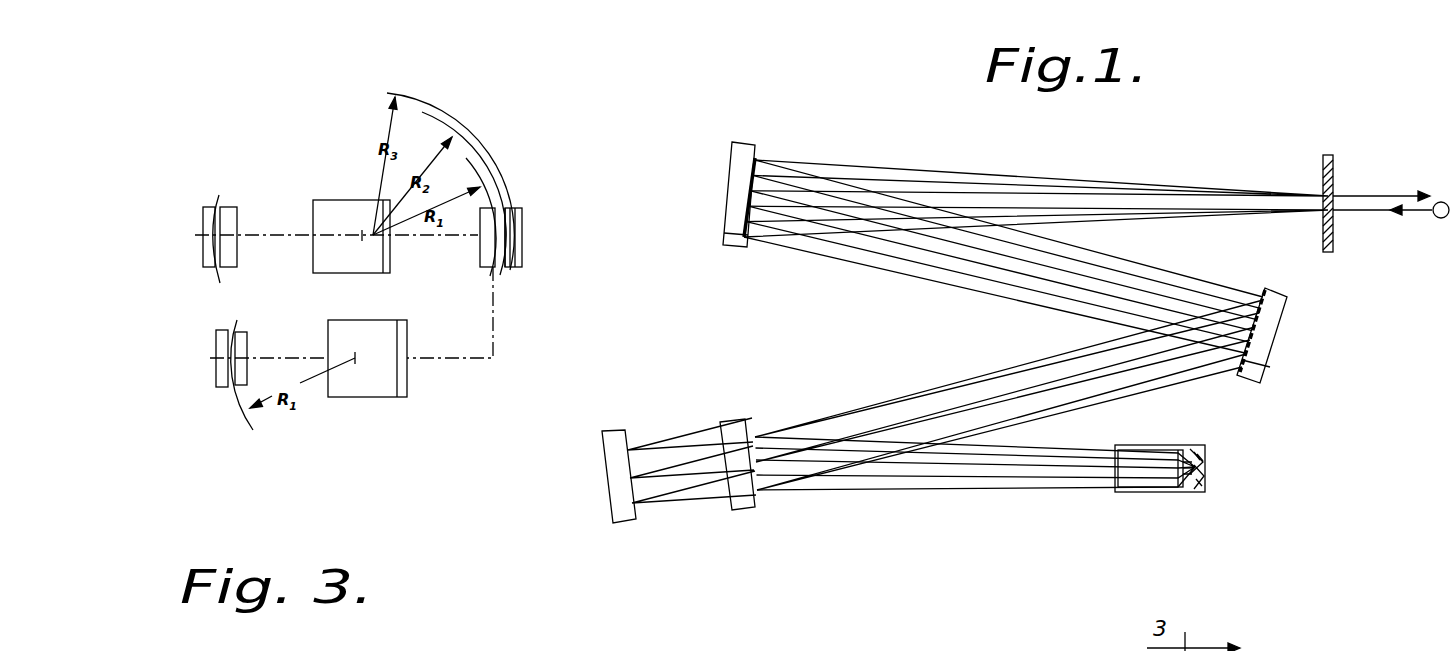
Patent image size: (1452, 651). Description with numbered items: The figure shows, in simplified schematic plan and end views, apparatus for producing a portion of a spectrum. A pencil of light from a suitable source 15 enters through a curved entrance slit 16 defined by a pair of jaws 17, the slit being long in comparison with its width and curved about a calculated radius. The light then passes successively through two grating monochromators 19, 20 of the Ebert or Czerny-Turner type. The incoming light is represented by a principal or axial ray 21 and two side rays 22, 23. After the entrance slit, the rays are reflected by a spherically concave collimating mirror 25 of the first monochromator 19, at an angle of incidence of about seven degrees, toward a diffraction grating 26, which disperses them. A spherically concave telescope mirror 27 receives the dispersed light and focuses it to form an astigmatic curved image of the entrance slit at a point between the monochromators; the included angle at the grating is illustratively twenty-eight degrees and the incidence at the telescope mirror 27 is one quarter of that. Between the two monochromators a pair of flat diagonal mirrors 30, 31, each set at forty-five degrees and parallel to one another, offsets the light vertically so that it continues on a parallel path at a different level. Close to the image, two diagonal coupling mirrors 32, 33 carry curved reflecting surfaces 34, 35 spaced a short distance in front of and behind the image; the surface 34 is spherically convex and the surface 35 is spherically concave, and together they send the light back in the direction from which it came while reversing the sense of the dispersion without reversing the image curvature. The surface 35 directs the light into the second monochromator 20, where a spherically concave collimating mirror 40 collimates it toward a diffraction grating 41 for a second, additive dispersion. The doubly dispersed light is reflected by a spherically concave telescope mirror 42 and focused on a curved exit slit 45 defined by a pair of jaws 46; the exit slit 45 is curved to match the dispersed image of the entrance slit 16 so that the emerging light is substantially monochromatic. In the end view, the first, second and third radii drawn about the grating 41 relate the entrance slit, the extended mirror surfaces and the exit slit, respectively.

In FIG. 1, the source 15 is at (1447, 222).
In FIG. 3, the entrance slit 16 is at (225, 372).
In FIG. 1, the entrance slit 16 is at (1335, 213).
In FIG. 3, the jaws 17 is at (216, 340).
In FIG. 3, the grating monochromator 19 is at (170, 214).
In FIG. 3, the grating monochromator 20 is at (200, 358).
In FIG. 1, the principal or axial ray 21 is at (1185, 208).
In FIG. 1, the side ray 22 is at (1229, 203).
In FIG. 1, the side ray 23 is at (1137, 218).
In FIG. 1, the collimating mirror 25 is at (723, 233).
In FIG. 3, the diffraction grating 26 is at (342, 388).
In FIG. 1, the diffraction grating 26 is at (1262, 378).
In FIG. 1, the telescope mirror 27 is at (747, 388).
In FIG. 1, the diagonal mirror 30 is at (1165, 445).
In FIG. 1, the diagonal mirror 31 is at (1125, 445).
In FIG. 3, the coupling mirror 32 is at (480, 258).
In FIG. 1, the coupling mirror 32 is at (1207, 450).
In FIG. 3, the coupling mirror 33 is at (525, 255).
In FIG. 1, the coupling mirror 33 is at (1198, 490).
In FIG. 3, the reflecting surface 34 is at (500, 210).
In FIG. 1, the reflecting surface 34 is at (1168, 490).
In FIG. 3, the reflecting surface 35 is at (522, 212).
In FIG. 1, the reflecting surface 35 is at (1187, 488).
In FIG. 1, the collimating mirror 40 is at (615, 477).
In FIG. 3, the diffraction grating 41 is at (318, 210).
In FIG. 1, the diffraction grating 41 is at (1285, 313).
In FIG. 1, the telescope mirror 42 is at (738, 158).
In FIG. 3, the exit slit 45 is at (215, 200).
In FIG. 1, the exit slit 45 is at (1333, 188).
In FIG. 3, the jaws 46 is at (198, 205).
In FIG. 1, the jaws 46 is at (1323, 183).